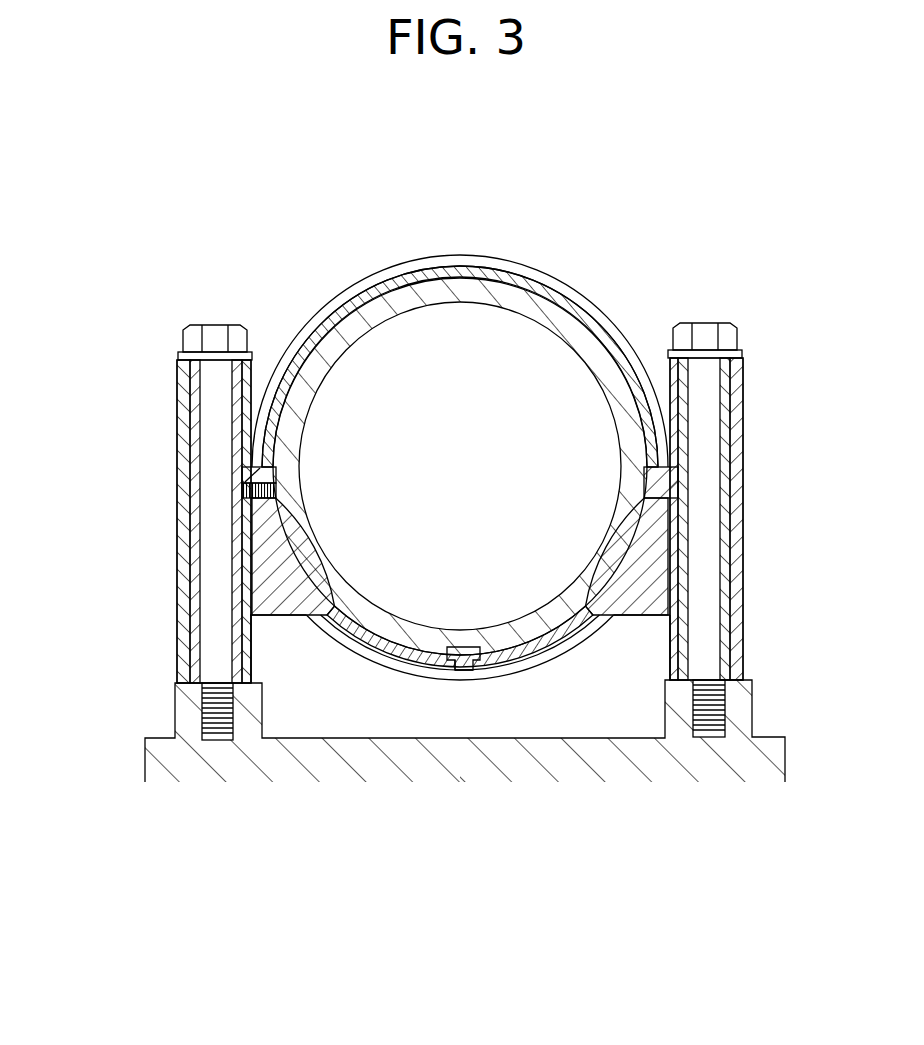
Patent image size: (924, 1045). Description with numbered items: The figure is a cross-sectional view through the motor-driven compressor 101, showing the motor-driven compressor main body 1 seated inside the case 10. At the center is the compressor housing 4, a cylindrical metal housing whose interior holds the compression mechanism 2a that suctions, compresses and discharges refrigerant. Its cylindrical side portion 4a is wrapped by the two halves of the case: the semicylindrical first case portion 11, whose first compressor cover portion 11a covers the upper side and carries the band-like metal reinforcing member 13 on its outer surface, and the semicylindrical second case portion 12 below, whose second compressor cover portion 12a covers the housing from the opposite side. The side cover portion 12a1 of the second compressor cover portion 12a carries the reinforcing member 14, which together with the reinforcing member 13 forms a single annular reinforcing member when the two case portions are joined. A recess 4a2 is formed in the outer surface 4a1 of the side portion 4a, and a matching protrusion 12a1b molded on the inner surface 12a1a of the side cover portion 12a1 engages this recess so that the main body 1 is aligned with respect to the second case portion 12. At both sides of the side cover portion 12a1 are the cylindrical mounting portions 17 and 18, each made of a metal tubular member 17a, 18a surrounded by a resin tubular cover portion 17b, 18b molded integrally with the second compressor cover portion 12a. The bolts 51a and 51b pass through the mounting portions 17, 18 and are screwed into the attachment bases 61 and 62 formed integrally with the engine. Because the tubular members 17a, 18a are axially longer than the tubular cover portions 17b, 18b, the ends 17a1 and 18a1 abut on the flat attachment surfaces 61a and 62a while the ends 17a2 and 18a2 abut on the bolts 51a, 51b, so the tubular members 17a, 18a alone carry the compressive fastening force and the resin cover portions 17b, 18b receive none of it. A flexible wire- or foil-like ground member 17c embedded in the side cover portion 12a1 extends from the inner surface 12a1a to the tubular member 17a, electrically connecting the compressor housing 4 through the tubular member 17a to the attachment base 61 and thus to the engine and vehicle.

The motor-driven compressor 101 is at (237, 205).
The motor-driven compressor main body 1 is at (477, 270).
The compression mechanism 2a is at (413, 342).
The compressor housing 4 is at (460, 506).
The side portion 4a is at (513, 297).
The outer surface 4a1 is at (386, 664).
The recess 4a2 is at (457, 670).
The case 10 is at (340, 290).
The first case portion 11 is at (462, 353).
The first compressor cover portion 11a is at (462, 353).
The second case portion 12 is at (460, 683).
The second compressor cover portion 12a is at (460, 683).
The side cover portion 12a1 is at (515, 676).
The inner surface 12a1a is at (488, 654).
The protrusion 12a1b is at (460, 646).
The reinforcing member 13 is at (633, 336).
The reinforcing member 14 is at (548, 672).
The mounting portion 17 is at (149, 491).
The tubular member 17a is at (190, 548).
The end 17a1 is at (178, 688).
The end 17a2 is at (178, 347).
The tubular cover portion 17b is at (197, 595).
The ground member 17c is at (243, 492).
The mounting portion 18 is at (783, 478).
The tubular member 18a is at (745, 525).
The end 18a1 is at (742, 683).
The end 18a2 is at (735, 352).
The tubular cover portion 18b is at (738, 562).
The bolt 51a is at (215, 323).
The bolt 51b is at (713, 322).
The attachment base 61 is at (250, 698).
The attachment surface 61a is at (272, 690).
The attachment base 62 is at (676, 698).
The attachment surface 62a is at (668, 678).